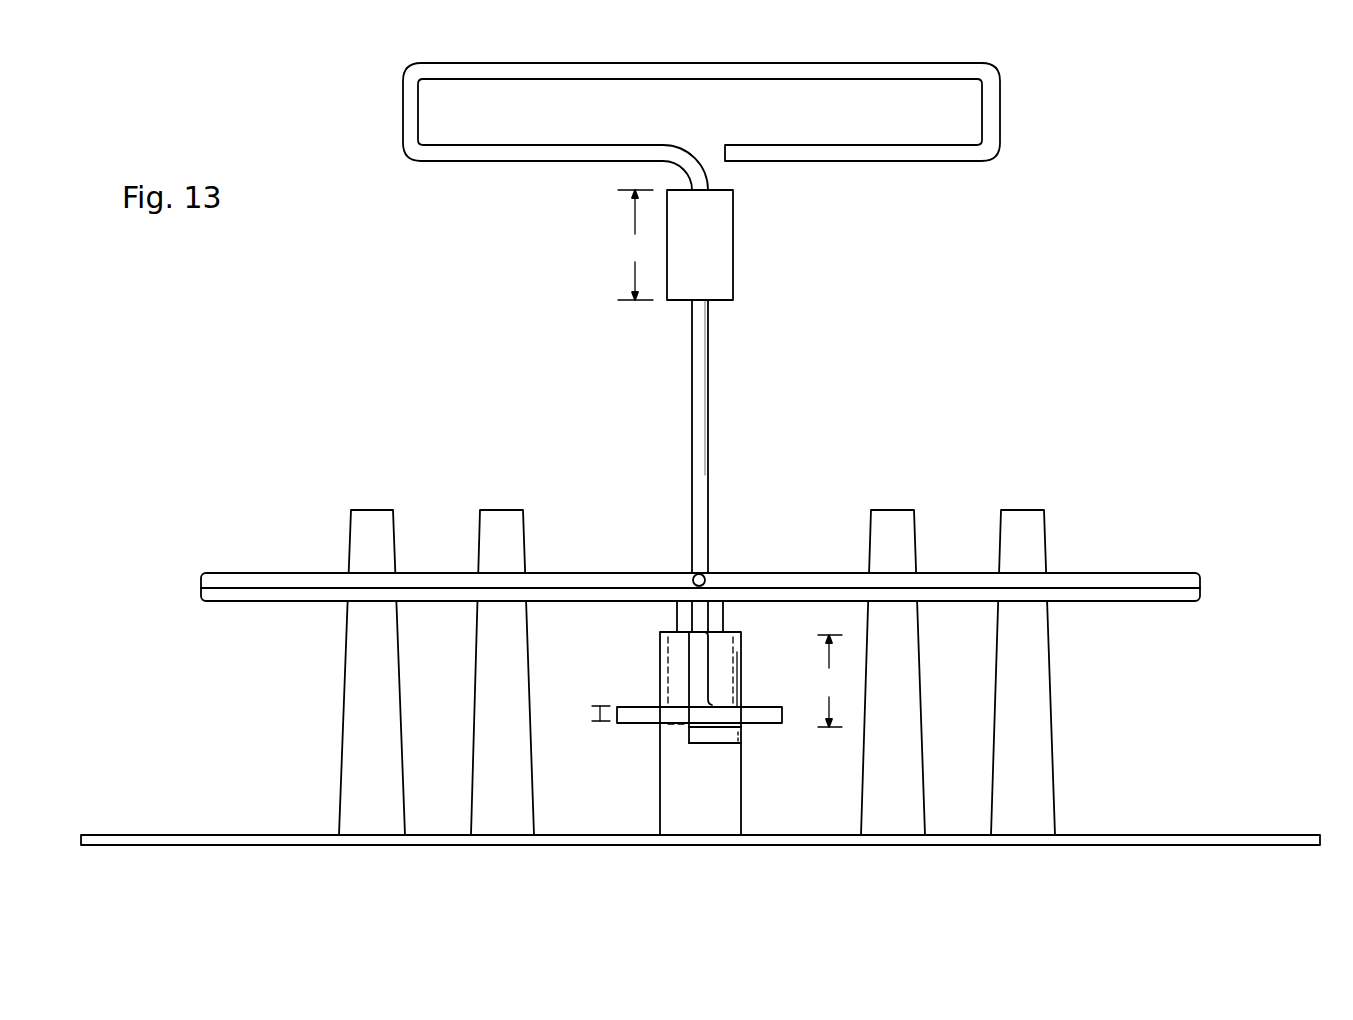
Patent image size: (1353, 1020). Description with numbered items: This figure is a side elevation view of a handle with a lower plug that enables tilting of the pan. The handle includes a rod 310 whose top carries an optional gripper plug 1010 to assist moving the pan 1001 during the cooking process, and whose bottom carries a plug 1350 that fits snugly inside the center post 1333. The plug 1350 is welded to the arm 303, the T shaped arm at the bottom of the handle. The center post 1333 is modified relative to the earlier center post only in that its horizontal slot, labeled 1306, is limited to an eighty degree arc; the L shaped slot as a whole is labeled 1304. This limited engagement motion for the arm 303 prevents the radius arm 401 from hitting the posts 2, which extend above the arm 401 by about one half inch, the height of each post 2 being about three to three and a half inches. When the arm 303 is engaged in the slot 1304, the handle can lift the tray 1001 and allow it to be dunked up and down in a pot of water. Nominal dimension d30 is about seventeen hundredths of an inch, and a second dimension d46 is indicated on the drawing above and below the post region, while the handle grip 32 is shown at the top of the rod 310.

The handle 32 is at (765, 73).
The gripper plug 1010 is at (723, 265).
The rod 310 is at (706, 453).
The radius arm 401 is at (703, 578).
The plug 1350 is at (722, 650).
The L shaped slot 1304 is at (768, 656).
The arm 303 is at (780, 693).
The horizontal slot 1306 is at (713, 727).
The center post 1333 is at (712, 743).
The post 2 is at (1042, 733).
The tray 1001 is at (1150, 838).
The dimension d46 is at (732, 458).
The nominal dimension d30 is at (595, 713).